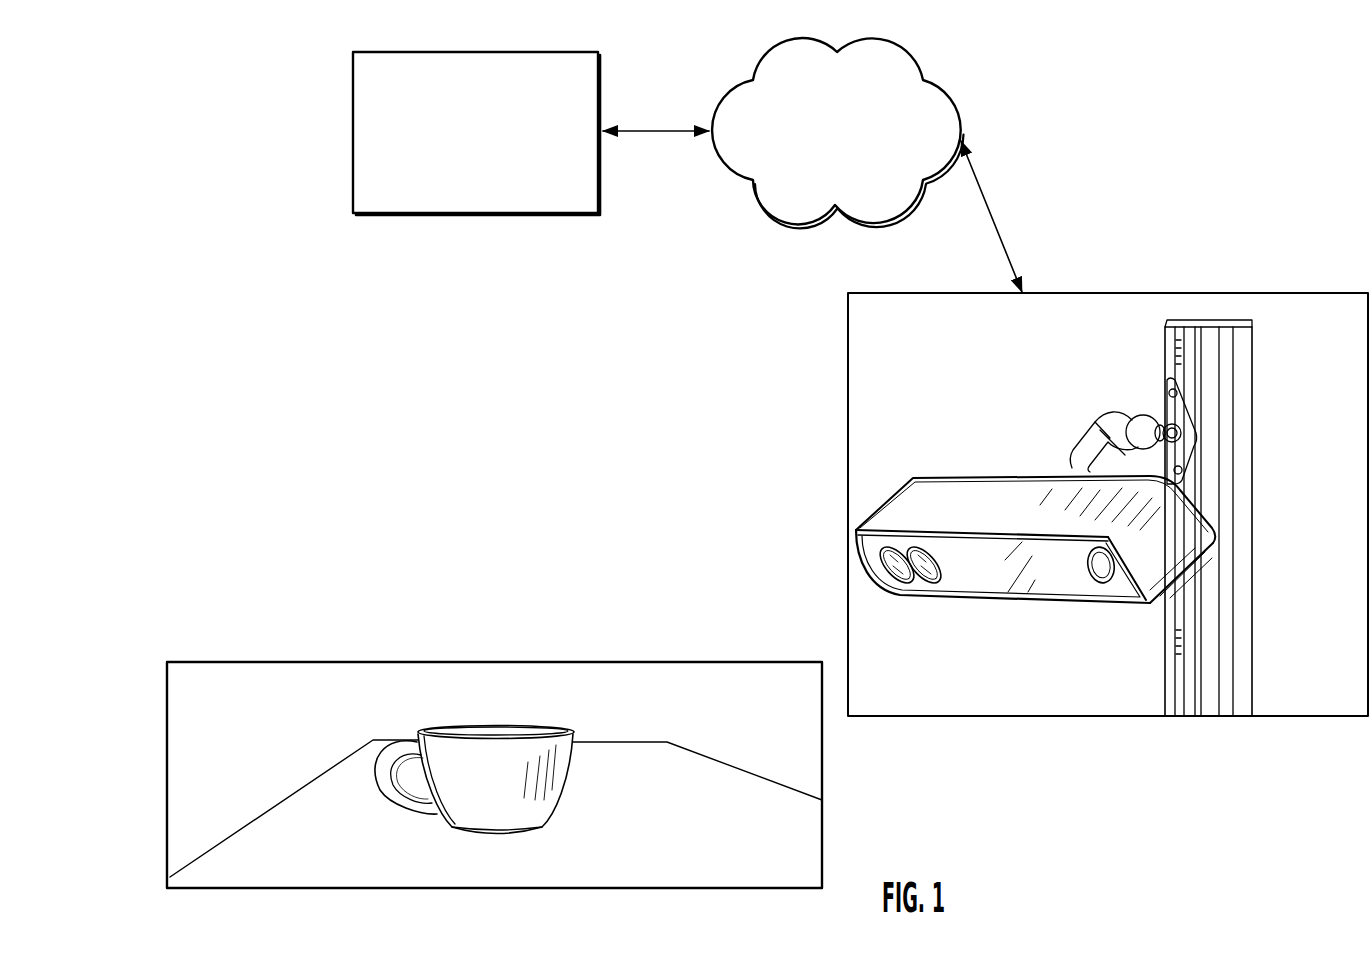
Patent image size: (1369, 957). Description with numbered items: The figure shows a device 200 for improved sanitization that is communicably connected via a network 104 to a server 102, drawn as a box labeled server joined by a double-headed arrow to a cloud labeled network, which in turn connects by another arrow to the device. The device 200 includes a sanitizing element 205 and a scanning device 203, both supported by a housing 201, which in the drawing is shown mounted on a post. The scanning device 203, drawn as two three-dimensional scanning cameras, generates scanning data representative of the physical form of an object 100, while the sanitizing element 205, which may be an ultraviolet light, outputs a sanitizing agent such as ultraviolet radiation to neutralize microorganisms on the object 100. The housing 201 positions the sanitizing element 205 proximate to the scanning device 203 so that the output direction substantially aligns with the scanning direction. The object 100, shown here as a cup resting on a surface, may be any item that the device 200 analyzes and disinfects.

The object 100 is at (514, 695).
The server 102 is at (540, 52).
The network 104 is at (896, 44).
The device 200 is at (1108, 466).
The housing 201 is at (1039, 485).
The scanning device 203 is at (886, 528).
The sanitizing element 205 is at (1106, 532).